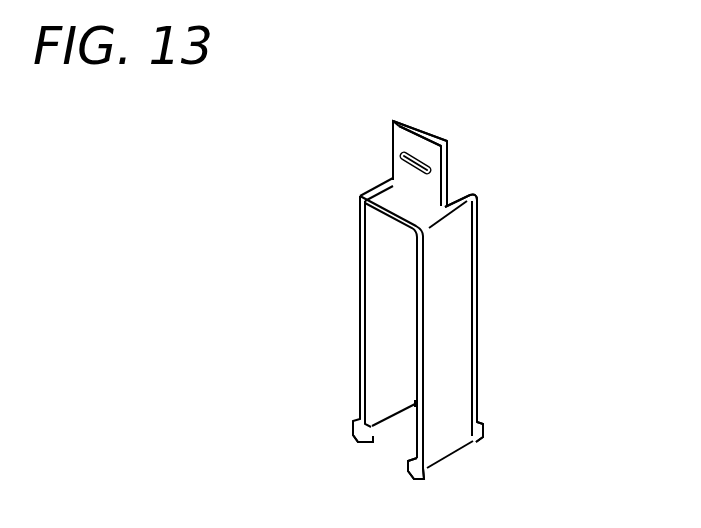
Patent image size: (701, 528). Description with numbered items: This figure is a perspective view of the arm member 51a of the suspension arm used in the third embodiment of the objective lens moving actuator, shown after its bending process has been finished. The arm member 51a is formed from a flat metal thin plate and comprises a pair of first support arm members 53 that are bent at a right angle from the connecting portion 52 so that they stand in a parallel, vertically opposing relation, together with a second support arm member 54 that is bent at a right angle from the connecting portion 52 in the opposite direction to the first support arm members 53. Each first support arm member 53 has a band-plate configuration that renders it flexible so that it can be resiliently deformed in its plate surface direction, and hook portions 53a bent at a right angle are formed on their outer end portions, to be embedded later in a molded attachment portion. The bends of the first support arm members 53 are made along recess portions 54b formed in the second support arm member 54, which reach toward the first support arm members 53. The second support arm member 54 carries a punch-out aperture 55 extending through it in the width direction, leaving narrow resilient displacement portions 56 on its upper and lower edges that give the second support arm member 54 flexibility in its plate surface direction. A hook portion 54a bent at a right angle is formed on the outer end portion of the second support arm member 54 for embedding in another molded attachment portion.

The arm member 51a is at (477, 365).
The connecting portion 52 is at (404, 201).
The first support arm members 53 is at (375, 297).
The hook portions 53a is at (352, 446).
The second support arm member 54 is at (424, 132).
The hook portion 54a is at (428, 131).
The recess portions 54b is at (456, 198).
The punch-out aperture 55 is at (408, 147).
The resilient displacement portions 56 is at (398, 156).